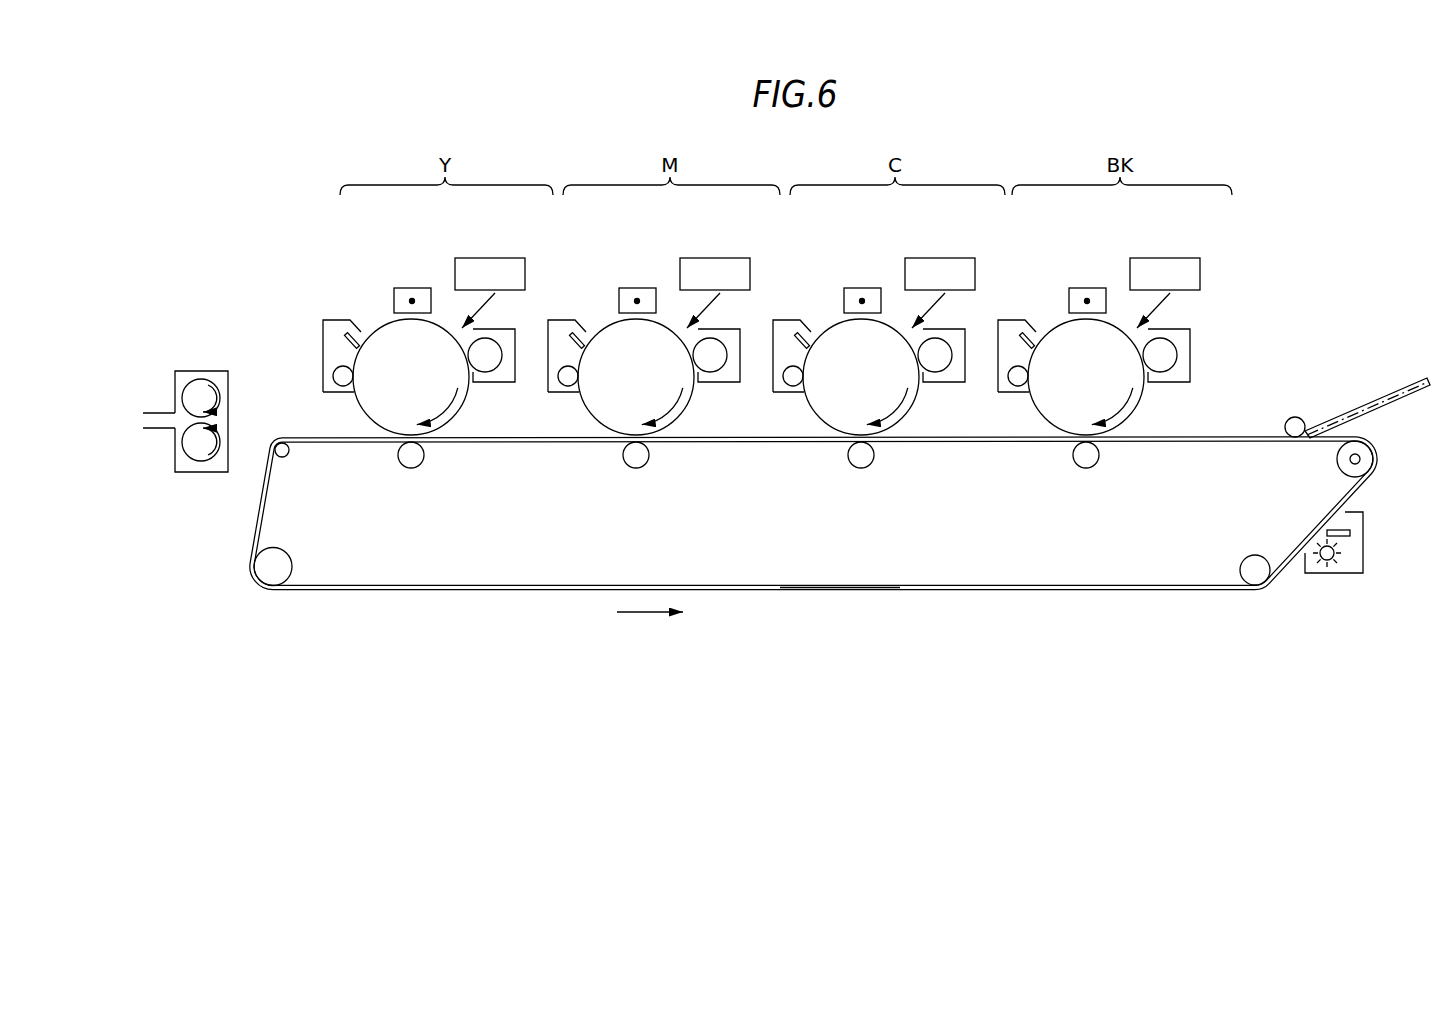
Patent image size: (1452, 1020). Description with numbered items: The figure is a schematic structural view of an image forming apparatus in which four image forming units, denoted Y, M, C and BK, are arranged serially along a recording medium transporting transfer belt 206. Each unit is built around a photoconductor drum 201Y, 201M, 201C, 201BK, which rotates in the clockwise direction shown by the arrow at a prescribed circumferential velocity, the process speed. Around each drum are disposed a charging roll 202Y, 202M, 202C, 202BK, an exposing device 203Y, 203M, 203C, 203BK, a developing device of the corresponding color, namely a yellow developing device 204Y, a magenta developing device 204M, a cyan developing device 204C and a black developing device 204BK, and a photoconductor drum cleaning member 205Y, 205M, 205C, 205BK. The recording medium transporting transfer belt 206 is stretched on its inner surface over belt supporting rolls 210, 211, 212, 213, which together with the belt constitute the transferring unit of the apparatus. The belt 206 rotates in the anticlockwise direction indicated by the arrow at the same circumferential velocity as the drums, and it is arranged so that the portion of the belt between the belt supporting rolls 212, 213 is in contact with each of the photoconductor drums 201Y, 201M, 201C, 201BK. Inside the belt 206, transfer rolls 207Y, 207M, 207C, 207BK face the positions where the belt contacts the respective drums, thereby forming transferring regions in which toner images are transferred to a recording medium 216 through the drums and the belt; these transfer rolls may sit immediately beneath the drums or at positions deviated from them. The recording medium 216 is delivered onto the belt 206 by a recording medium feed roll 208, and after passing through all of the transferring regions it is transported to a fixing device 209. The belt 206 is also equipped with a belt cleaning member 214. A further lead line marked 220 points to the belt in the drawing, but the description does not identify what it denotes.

The photoconductor drum 201Y is at (411, 377).
The photoconductor drum 201M is at (636, 377).
The photoconductor drum 201C is at (861, 377).
The photoconductor drum 201BK is at (1086, 377).
The charging roll 202Y is at (412, 288).
The charging roll 202M is at (637, 288).
The charging roll 202C is at (862, 288).
The charging roll 202BK is at (1087, 288).
The exposing device 203Y is at (490, 293).
The exposing device 203M is at (715, 293).
The exposing device 203C is at (940, 293).
The exposing device 203BK is at (1165, 293).
The yellow developing device 204Y is at (494, 382).
The magenta developing device 204M is at (719, 382).
The cyan developing device 204C is at (944, 382).
The black developing device 204BK is at (1169, 382).
The photoconductor drum cleaning member 205Y is at (330, 320).
The photoconductor drum cleaning member 205M is at (555, 320).
The photoconductor drum cleaning member 205C is at (780, 320).
The photoconductor drum cleaning member 205BK is at (1005, 320).
The recording medium transporting transfer belt 206 is at (502, 592).
The transfer roll 207Y is at (423, 458).
The transfer roll 207M is at (648, 458).
The transfer roll 207C is at (873, 458).
The transfer roll 207BK is at (1098, 458).
The recording medium feed roll 208 is at (1296, 417).
The fixing device 209 is at (203, 371).
The belt supporting roll 210 is at (275, 575).
The belt supporting roll 211 is at (1257, 565).
The belt supporting roll 212 is at (1377, 456).
The belt supporting roll 213 is at (282, 443).
The belt cleaning member 214 is at (1348, 573).
The recording medium 216 is at (1372, 402).
The belt surface 220 is at (847, 602).